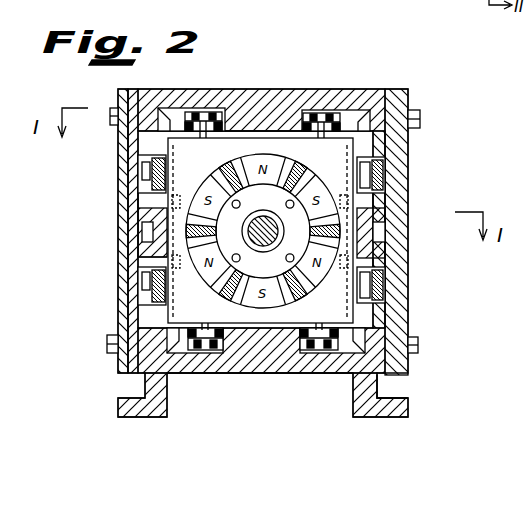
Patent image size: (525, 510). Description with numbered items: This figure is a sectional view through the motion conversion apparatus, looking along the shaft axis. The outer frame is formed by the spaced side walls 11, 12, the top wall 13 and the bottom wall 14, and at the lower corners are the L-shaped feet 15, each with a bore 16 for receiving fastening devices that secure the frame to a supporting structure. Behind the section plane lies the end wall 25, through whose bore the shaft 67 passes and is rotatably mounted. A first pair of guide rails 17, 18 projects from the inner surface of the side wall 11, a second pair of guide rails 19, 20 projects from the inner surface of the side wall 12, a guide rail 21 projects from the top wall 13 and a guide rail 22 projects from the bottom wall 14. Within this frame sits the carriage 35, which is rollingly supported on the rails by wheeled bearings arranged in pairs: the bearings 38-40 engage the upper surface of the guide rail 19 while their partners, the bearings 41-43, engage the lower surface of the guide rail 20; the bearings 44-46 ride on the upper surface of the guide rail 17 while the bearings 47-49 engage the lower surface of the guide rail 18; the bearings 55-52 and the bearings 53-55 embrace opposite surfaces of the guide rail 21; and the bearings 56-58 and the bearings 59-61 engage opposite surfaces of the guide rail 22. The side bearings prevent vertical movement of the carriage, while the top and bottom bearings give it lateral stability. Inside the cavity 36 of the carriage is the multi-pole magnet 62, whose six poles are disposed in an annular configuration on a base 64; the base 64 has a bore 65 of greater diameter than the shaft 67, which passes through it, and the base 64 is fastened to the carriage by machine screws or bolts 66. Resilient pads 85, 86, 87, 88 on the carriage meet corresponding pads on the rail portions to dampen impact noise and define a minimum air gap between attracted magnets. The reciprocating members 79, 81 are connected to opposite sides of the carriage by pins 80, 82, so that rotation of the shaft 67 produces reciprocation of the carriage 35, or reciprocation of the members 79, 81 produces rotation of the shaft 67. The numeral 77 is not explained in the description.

The side wall 11 is at (122, 277).
The side wall 12 is at (398, 184).
The top wall 13 is at (324, 100).
The bottom wall 14 is at (191, 364).
The L-shaped feet 15 is at (378, 391).
The bore 16 is at (407, 405).
The guide rail 17 is at (140, 204).
The guide rail 18 is at (150, 257).
The guide rail 19 is at (373, 202).
The guide rail 20 is at (380, 263).
The guide rail 21 is at (236, 117).
The guide rail 22 is at (263, 348).
The end wall 25 is at (418, 118).
The carriage 35 is at (162, 140).
The cavity 36 is at (303, 176).
The wheeled bearings 38-40 is at (370, 160).
The wheeled bearings 41-43 is at (380, 308).
The wheeled bearings 44-46 is at (150, 158).
The wheeled bearings 47-49 is at (150, 303).
The wheeled bearings 53-55 is at (165, 110).
The wheeled bearings 55-52 is at (348, 108).
The wheeled bearings 56-58 is at (338, 345).
The wheeled bearings 59-61 is at (183, 355).
The multi-pole magnet 62 is at (212, 182).
The base 64 is at (212, 188).
The bore 65 is at (276, 232).
The machine screws or bolts 66 is at (230, 264).
The shaft 67 is at (262, 244).
The fastener 77 is at (284, 205).
The reciprocating member 79 is at (140, 220).
The pin 80 is at (150, 238).
The reciprocating member 81 is at (380, 222).
The pin 82 is at (377, 238).
The resilient pad 85 is at (312, 182).
The resilient pad 86 is at (312, 289).
The resilient pad 87 is at (222, 282).
The resilient pad 88 is at (222, 178).